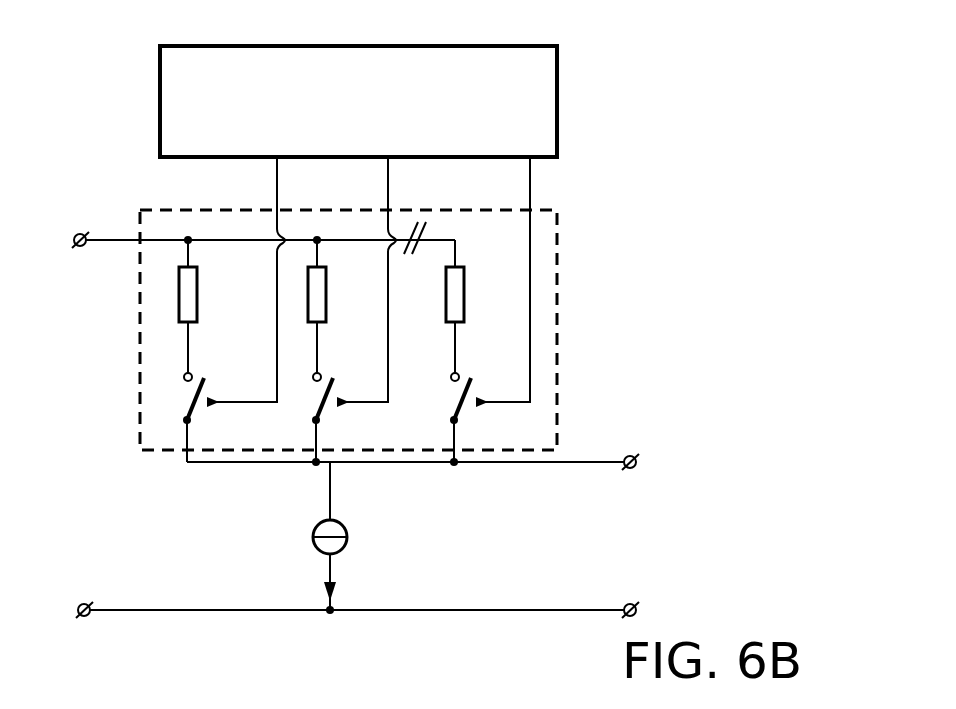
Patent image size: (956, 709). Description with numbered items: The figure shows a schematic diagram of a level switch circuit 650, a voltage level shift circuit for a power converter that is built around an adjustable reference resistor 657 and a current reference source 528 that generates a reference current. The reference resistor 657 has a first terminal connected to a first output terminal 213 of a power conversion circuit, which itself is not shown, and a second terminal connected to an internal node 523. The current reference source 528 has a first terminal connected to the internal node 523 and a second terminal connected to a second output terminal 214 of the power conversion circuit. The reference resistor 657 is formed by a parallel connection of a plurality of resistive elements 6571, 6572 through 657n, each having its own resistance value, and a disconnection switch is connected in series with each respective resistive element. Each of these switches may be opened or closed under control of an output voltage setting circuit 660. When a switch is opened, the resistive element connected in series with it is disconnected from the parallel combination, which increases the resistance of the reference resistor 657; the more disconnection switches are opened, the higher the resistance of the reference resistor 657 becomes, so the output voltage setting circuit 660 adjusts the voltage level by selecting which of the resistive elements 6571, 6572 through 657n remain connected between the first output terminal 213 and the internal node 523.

The level switch circuit 650 is at (696, 194).
The output voltage setting circuit 660 is at (557, 102).
The first output terminal 213 is at (117, 239).
The second output terminal 214 is at (182, 609).
The adjustable reference resistor 657 is at (557, 255).
The resistive element 6571 is at (197, 305).
The resistive element 6572 is at (326, 305).
The resistive element 657n is at (464, 305).
The internal node 523 is at (318, 464).
The current reference source 528 is at (347, 538).